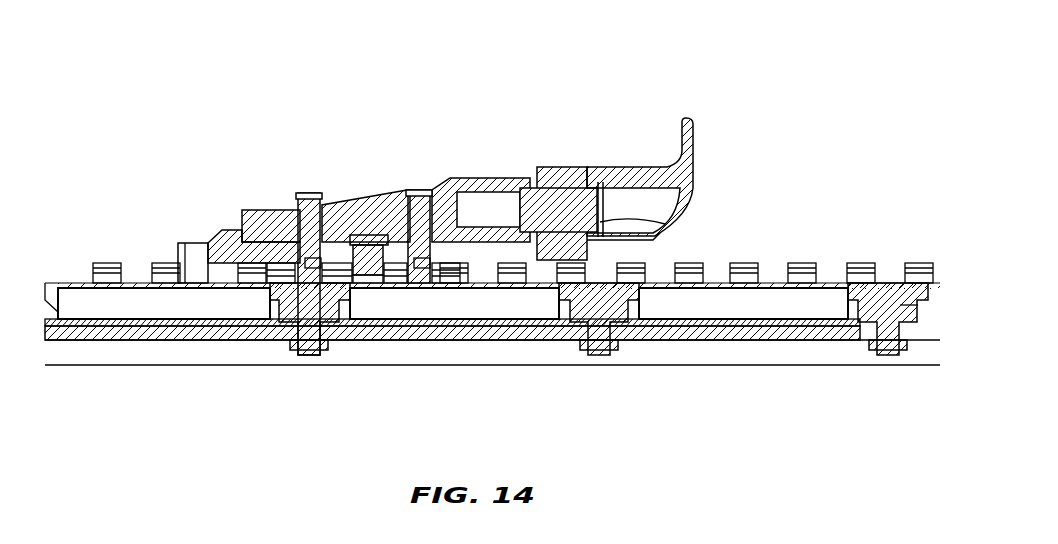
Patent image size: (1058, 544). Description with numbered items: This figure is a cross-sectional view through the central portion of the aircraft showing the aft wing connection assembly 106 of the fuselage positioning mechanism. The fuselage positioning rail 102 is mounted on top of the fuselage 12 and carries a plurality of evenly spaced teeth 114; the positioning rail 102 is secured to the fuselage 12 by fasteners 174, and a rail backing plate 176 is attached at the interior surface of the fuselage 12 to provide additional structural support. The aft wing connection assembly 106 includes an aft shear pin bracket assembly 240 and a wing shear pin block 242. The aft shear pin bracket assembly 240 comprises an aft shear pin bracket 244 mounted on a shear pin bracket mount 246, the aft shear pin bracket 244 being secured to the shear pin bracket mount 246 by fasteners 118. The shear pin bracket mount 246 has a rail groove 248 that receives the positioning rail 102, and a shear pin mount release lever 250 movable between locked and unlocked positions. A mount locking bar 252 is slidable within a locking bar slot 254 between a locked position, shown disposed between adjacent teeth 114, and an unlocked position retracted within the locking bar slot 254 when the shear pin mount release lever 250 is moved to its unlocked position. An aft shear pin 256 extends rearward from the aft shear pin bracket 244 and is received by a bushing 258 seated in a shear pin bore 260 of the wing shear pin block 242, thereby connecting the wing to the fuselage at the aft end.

The aft wing connection assembly 106 is at (262, 50).
The aft shear pin bracket assembly 240 is at (214, 140).
The aft shear pin bracket 244 is at (268, 222).
The fasteners 118 is at (316, 205).
The locking bar slot 254 is at (368, 246).
The aft shear pin 256 is at (527, 205).
The bushing 258 is at (573, 180).
The wing shear pin block 242 is at (690, 143).
The shear pin bore 260 is at (660, 225).
The teeth 114 is at (861, 262).
The shear pin mount release lever 250 is at (193, 256).
The shear pin bracket mount 246 is at (222, 250).
The fuselage positioning rail 102 is at (82, 305).
The fuselage 12 is at (130, 322).
The rail groove 248 is at (252, 262).
The fasteners 174 is at (303, 343).
The mount locking bar 252 is at (366, 300).
The rail backing plate 176 is at (717, 336).